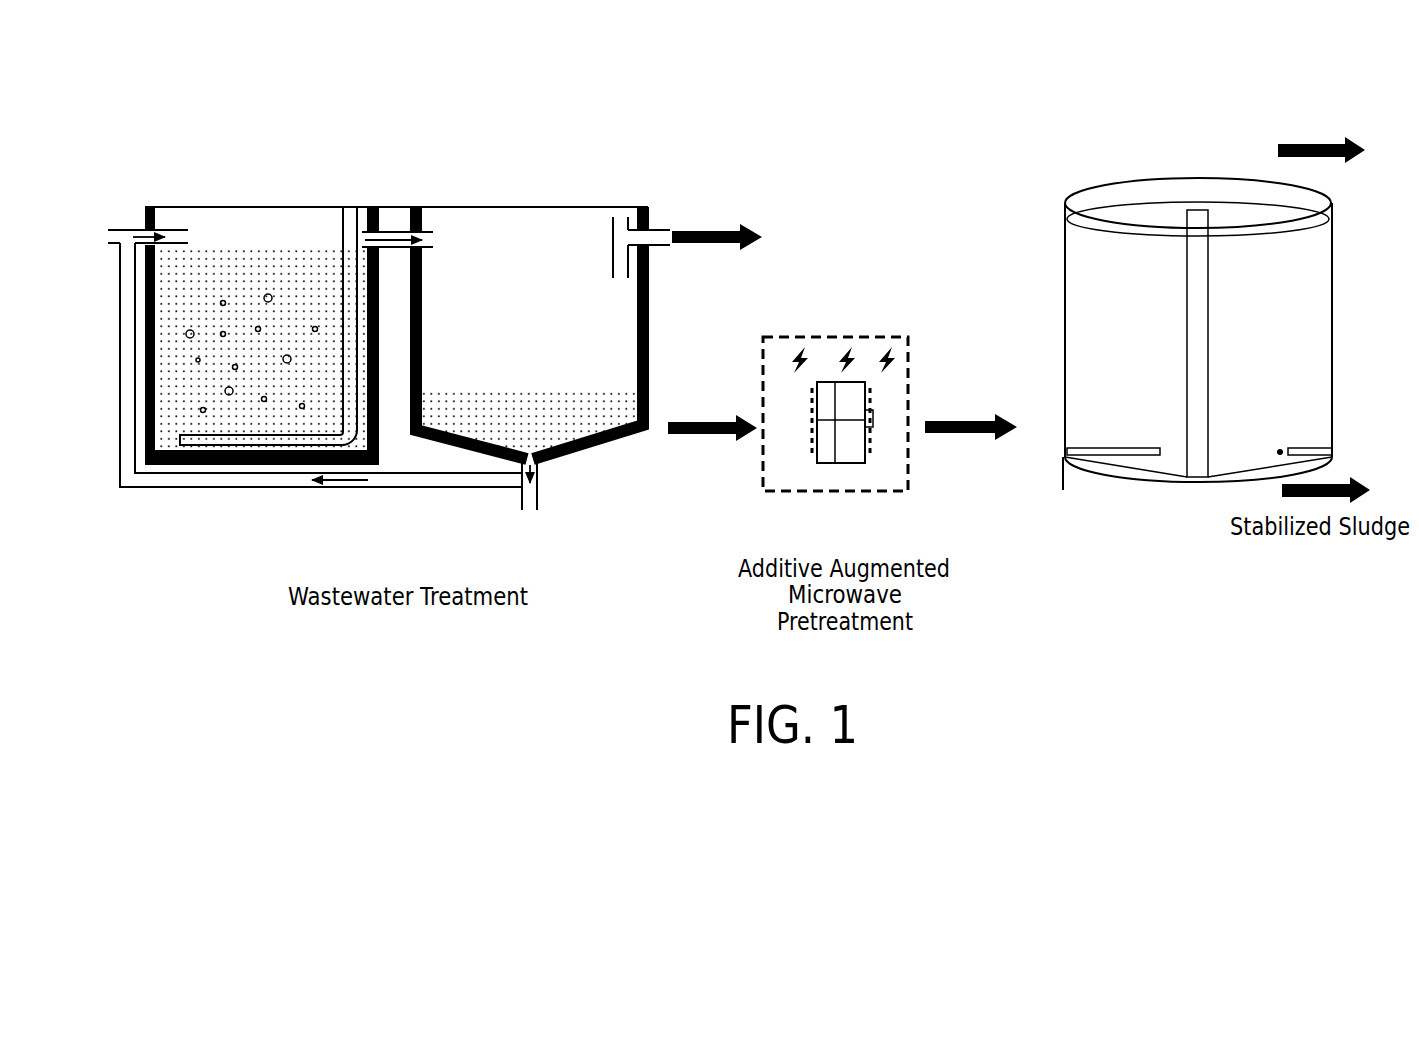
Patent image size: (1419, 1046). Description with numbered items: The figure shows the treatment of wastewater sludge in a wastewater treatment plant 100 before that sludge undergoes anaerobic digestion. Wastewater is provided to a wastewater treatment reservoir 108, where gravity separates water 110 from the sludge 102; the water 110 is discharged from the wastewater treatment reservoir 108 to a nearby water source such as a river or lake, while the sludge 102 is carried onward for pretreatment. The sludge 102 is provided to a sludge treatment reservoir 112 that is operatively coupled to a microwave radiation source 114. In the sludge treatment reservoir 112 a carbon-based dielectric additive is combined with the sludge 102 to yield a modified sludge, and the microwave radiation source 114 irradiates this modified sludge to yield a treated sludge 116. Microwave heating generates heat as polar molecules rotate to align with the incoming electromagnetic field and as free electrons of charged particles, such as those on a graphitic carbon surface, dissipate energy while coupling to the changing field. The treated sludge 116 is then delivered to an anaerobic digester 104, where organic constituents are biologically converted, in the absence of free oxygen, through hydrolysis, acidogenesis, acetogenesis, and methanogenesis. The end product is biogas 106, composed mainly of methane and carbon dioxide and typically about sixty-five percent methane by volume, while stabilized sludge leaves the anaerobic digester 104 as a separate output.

The wastewater treatment plant 100 is at (167, 180).
The sludge 102 is at (713, 436).
The anaerobic digester 104 is at (1332, 372).
The biogas 106 is at (1328, 158).
The wastewater treatment reservoir 108 is at (572, 455).
The water 110 is at (735, 245).
The sludge treatment reservoir 112 is at (851, 462).
The microwave radiation source 114 is at (897, 350).
The treated sludge 116 is at (965, 435).